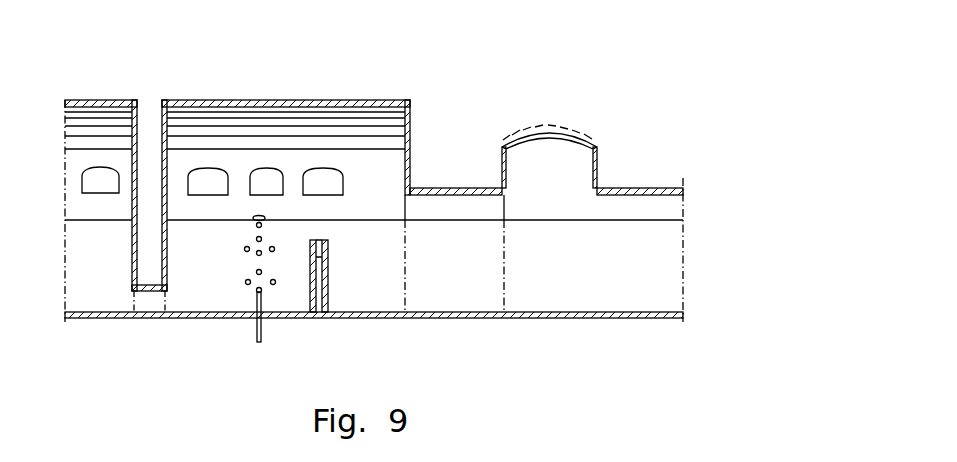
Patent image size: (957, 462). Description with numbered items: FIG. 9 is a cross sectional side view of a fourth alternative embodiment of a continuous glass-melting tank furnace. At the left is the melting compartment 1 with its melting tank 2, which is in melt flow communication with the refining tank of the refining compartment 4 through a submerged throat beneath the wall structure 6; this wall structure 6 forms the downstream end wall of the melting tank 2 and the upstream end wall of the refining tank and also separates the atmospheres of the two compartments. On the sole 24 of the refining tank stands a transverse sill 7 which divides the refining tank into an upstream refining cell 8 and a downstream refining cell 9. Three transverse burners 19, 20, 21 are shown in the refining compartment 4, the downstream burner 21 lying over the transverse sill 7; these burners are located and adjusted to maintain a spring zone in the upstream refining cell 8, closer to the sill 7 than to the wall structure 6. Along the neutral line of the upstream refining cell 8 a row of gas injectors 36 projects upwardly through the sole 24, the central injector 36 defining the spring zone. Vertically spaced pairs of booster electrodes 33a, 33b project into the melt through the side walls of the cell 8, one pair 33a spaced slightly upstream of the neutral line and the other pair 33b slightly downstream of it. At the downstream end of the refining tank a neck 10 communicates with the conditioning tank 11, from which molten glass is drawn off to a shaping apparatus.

The melting compartment 1 is at (108, 97).
The melting tank 2 is at (86, 274).
The refining compartment 4 is at (377, 97).
The wall structure 6 is at (157, 104).
The transverse sill 7 is at (318, 257).
The upstream refining cell 8 is at (202, 274).
The downstream refining cell 9 is at (360, 274).
The neck 10 is at (456, 274).
The conditioning tank 11 is at (554, 274).
The transverse burner 19 is at (199, 192).
The transverse burner 20 is at (257, 192).
The transverse burner 21 is at (314, 192).
The sole 24 is at (184, 308).
The pair of booster electrodes 33a is at (246, 280).
The pair of booster electrodes 33b is at (275, 280).
The gas injector 36 is at (257, 330).